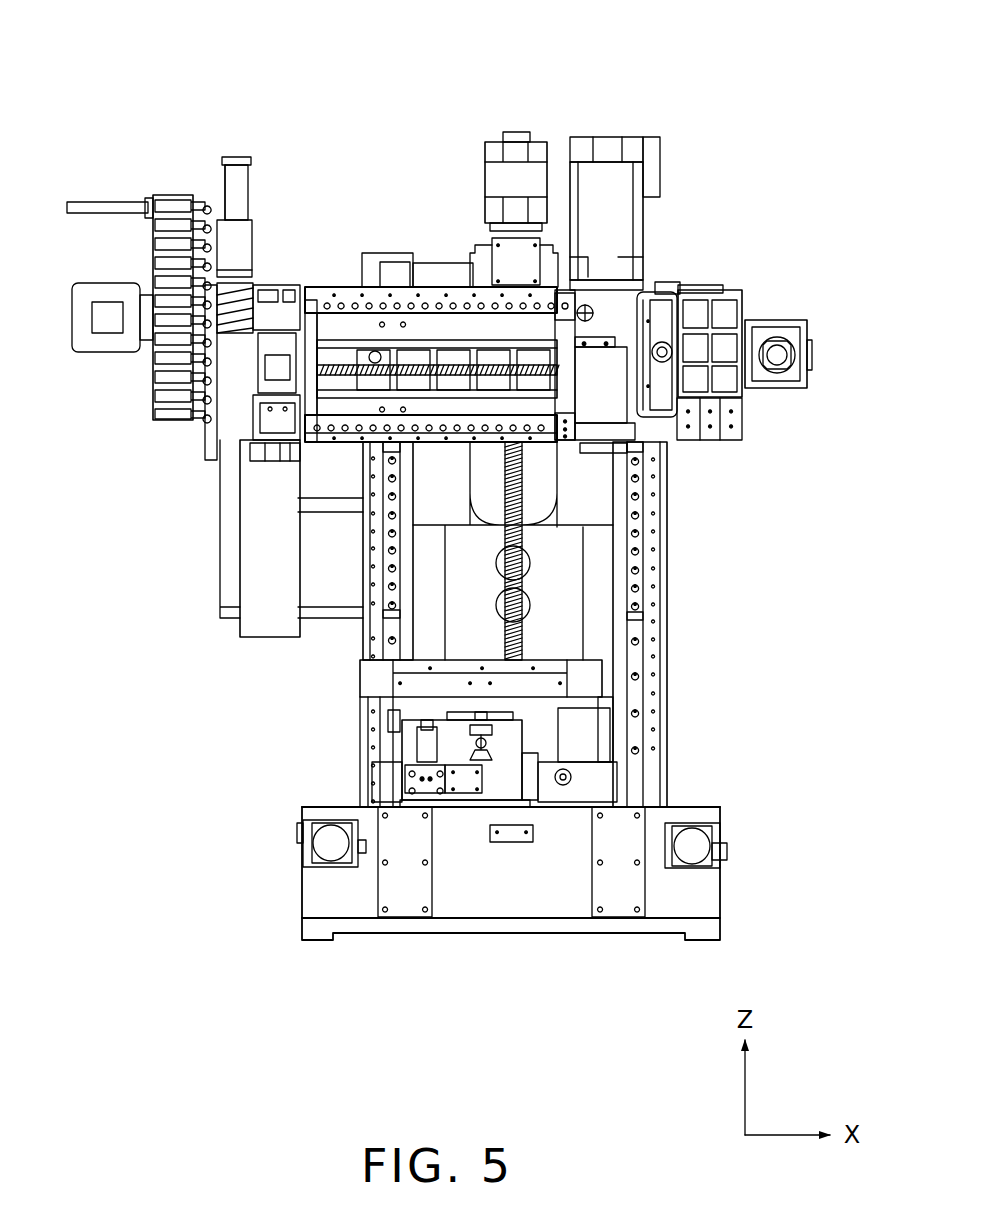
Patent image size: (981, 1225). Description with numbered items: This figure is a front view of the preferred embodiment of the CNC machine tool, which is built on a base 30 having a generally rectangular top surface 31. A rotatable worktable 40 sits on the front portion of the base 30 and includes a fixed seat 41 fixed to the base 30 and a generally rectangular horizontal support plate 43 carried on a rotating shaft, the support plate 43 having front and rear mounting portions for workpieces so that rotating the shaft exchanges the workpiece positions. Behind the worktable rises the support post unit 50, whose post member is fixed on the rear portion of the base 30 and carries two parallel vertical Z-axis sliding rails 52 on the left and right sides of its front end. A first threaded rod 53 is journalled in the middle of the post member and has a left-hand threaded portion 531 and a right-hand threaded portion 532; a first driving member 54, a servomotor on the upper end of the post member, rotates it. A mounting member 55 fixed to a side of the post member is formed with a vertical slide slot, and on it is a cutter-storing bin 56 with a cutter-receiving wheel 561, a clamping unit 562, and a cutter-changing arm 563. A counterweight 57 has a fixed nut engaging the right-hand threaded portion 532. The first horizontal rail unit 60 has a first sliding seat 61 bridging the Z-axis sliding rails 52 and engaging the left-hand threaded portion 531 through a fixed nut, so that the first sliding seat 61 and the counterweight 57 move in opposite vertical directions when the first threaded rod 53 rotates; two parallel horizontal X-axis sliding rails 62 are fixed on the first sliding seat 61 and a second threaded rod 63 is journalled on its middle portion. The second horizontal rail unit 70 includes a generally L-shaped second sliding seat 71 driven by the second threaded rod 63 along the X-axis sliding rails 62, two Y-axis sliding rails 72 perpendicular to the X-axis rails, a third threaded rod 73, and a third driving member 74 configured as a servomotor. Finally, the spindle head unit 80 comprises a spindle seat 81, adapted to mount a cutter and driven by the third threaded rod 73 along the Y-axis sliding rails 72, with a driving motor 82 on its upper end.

The base 30 is at (733, 882).
The top surface 31 is at (682, 808).
The rotatable worktable 40 is at (395, 742).
The fixed seat 41 is at (448, 730).
The horizontal support plate 43 is at (370, 686).
The support post unit 50 is at (479, 624).
The Z-axis sliding rails 52 is at (368, 572).
The first threaded rod 53 is at (516, 530).
The left-hand threaded portion 531 is at (518, 463).
The right-hand threaded portion 532 is at (518, 632).
The first driving member 54 is at (496, 145).
The mounting member 55 is at (250, 525).
The cutter-storing bin 56 is at (168, 274).
The cutter-receiving wheel 561 is at (175, 200).
The tool magazine cylinder 562 is at (237, 158).
The cutter-changing arm 563 is at (262, 454).
The counterweight 57 is at (603, 733).
The first horizontal rail unit 60 is at (766, 311).
The first sliding seat 61 is at (431, 320).
The X-axis sliding rails 62 is at (350, 303).
The second threaded rod 63 is at (405, 350).
The second horizontal rail unit 70 is at (766, 323).
The second sliding seat 71 is at (703, 330).
The Y-axis sliding rails 72 is at (656, 300).
The third threaded rod 73 is at (676, 352).
The third driving member 74 is at (806, 355).
The spindle head unit 80 is at (599, 229).
The spindle seat 81 is at (594, 302).
The driving motor 82 is at (610, 190).